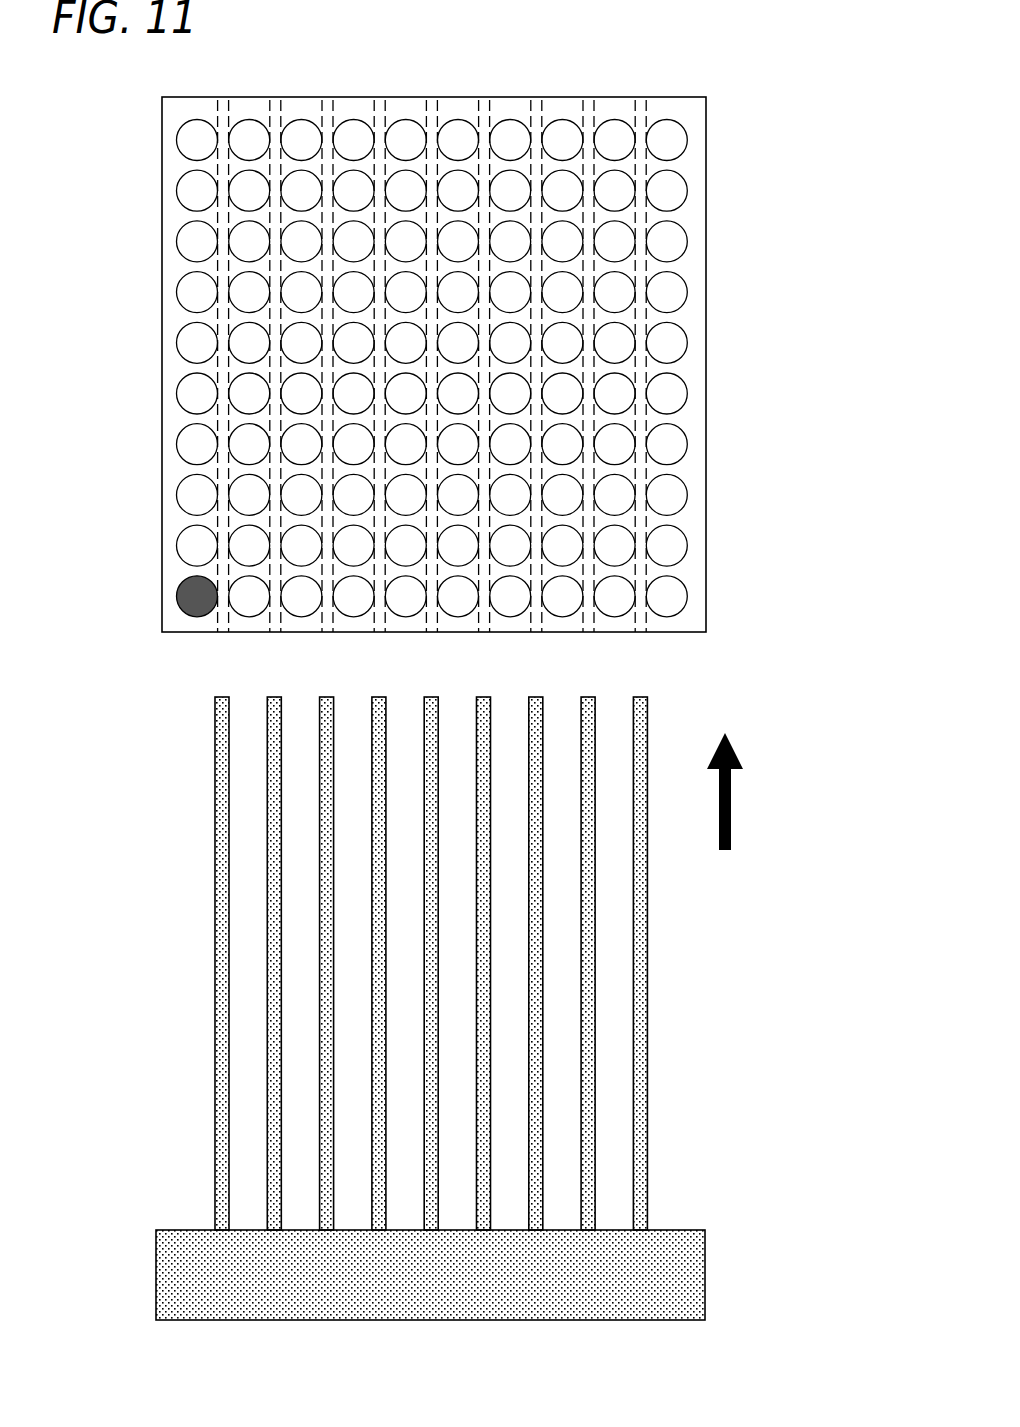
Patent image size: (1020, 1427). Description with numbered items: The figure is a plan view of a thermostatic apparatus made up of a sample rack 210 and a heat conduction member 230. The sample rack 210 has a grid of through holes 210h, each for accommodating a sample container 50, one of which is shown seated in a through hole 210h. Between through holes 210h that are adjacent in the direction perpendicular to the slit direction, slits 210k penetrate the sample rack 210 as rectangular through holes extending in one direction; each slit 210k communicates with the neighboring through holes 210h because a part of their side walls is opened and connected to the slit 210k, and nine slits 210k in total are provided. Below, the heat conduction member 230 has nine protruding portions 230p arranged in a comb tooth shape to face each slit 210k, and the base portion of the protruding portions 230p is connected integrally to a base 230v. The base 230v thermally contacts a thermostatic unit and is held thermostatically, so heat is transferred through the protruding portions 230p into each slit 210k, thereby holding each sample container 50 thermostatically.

The sample rack 210 is at (727, 317).
The through hole 210h is at (180, 493).
The sample container 50 is at (176, 591).
The slit 210k is at (216, 637).
The heat conduction member 230 is at (744, 1017).
The protruding portion 230p is at (215, 780).
The base 230v is at (678, 1224).